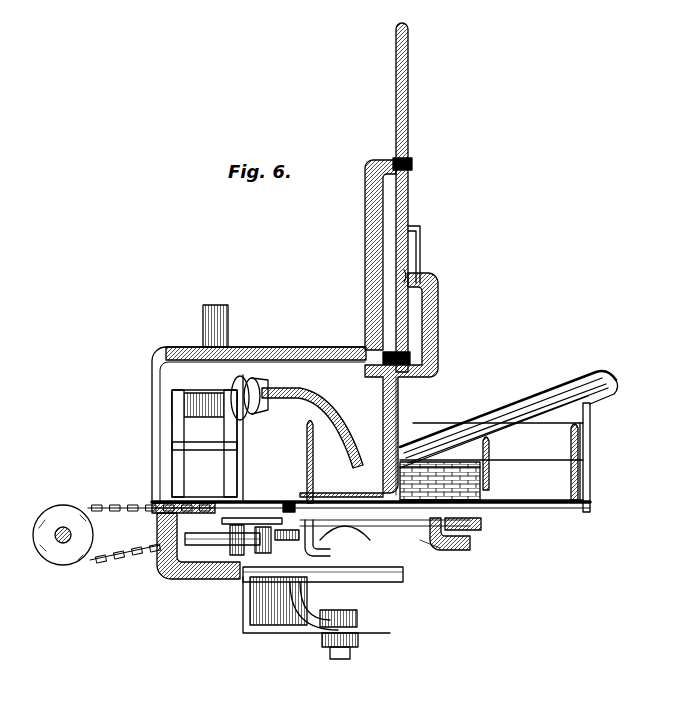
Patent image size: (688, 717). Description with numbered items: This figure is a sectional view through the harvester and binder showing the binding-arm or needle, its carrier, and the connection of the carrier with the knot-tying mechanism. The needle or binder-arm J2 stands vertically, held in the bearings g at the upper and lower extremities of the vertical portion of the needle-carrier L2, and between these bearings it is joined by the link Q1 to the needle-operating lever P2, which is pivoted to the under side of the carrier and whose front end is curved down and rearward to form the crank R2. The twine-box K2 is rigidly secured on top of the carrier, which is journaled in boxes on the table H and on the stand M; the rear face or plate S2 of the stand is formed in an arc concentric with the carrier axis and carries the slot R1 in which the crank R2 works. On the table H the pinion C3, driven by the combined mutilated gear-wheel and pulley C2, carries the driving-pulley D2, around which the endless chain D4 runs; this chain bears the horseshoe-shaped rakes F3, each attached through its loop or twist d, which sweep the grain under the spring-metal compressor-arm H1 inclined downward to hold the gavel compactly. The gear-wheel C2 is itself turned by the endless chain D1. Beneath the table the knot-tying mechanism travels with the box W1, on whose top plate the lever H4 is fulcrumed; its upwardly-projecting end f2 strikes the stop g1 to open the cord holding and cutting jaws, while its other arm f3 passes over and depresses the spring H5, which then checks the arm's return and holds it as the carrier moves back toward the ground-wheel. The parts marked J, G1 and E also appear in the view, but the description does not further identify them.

The needle or binder-arm J2 is at (410, 112).
The stop g1 is at (414, 164).
The needle-carrier L2 is at (373, 255).
The link Q1 is at (422, 256).
The needle-operating lever P2 is at (440, 300).
The bearings g is at (412, 357).
The twine-box K2 is at (205, 311).
The stand M is at (160, 447).
The roller J is at (172, 408).
The slot R1 is at (270, 416).
The crank R2 is at (285, 393).
The rear face or plate S2 is at (257, 450).
The compressor-arm H1 is at (352, 440).
The rakes F3 is at (305, 500).
The chute G1 is at (520, 403).
The table H is at (590, 497).
The driving-pulley D2 is at (455, 470).
The endless chain D4 is at (489, 455).
The loop or twist d is at (523, 475).
The endless chain D1 is at (135, 548).
The box W1 is at (270, 636).
The upwardly-projecting end f2 is at (292, 540).
The pipe E is at (385, 539).
The lever H4 is at (383, 548).
The combined mutilated gear-wheel and pulley C2 is at (470, 530).
The spring H5 is at (468, 549).
The upwardly-extending arm f3 is at (440, 560).
The pinion C3 is at (425, 550).